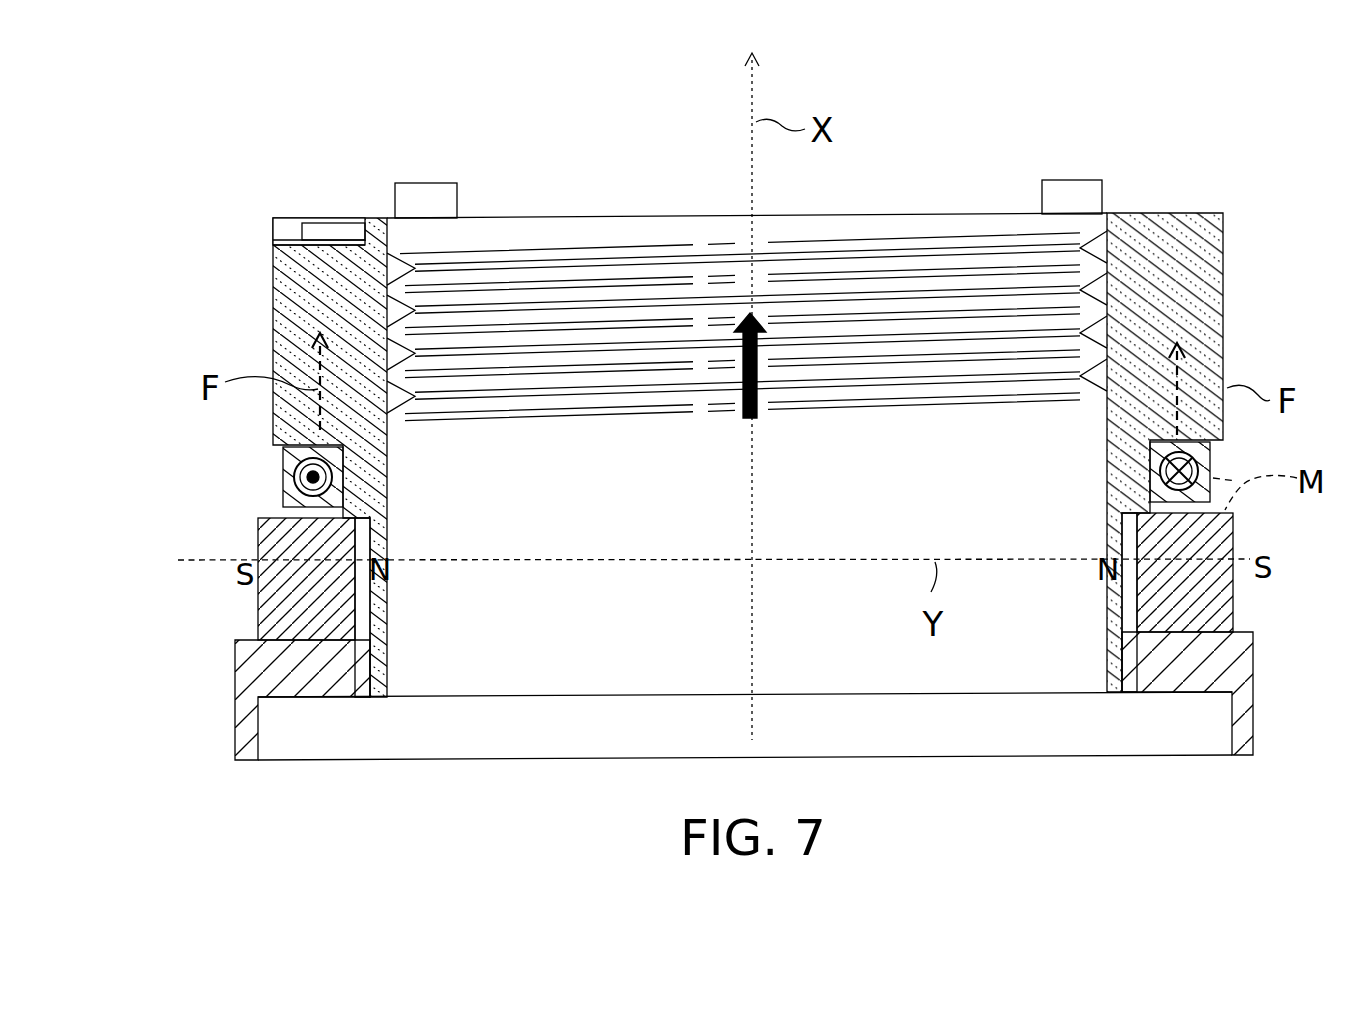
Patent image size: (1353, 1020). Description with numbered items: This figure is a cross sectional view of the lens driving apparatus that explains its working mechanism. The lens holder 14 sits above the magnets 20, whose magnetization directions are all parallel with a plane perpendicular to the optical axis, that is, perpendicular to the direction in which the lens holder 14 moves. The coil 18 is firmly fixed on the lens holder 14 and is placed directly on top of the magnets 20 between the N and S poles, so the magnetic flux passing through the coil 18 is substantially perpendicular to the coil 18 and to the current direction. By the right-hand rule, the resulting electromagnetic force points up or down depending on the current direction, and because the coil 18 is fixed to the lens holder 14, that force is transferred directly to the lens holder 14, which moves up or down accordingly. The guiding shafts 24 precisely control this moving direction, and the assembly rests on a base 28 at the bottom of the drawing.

The lens holder 14 is at (1225, 262).
The coil 18 is at (283, 477).
The magnets 20 is at (258, 532).
The guiding shafts 24 is at (424, 195).
The base 28 is at (1253, 665).